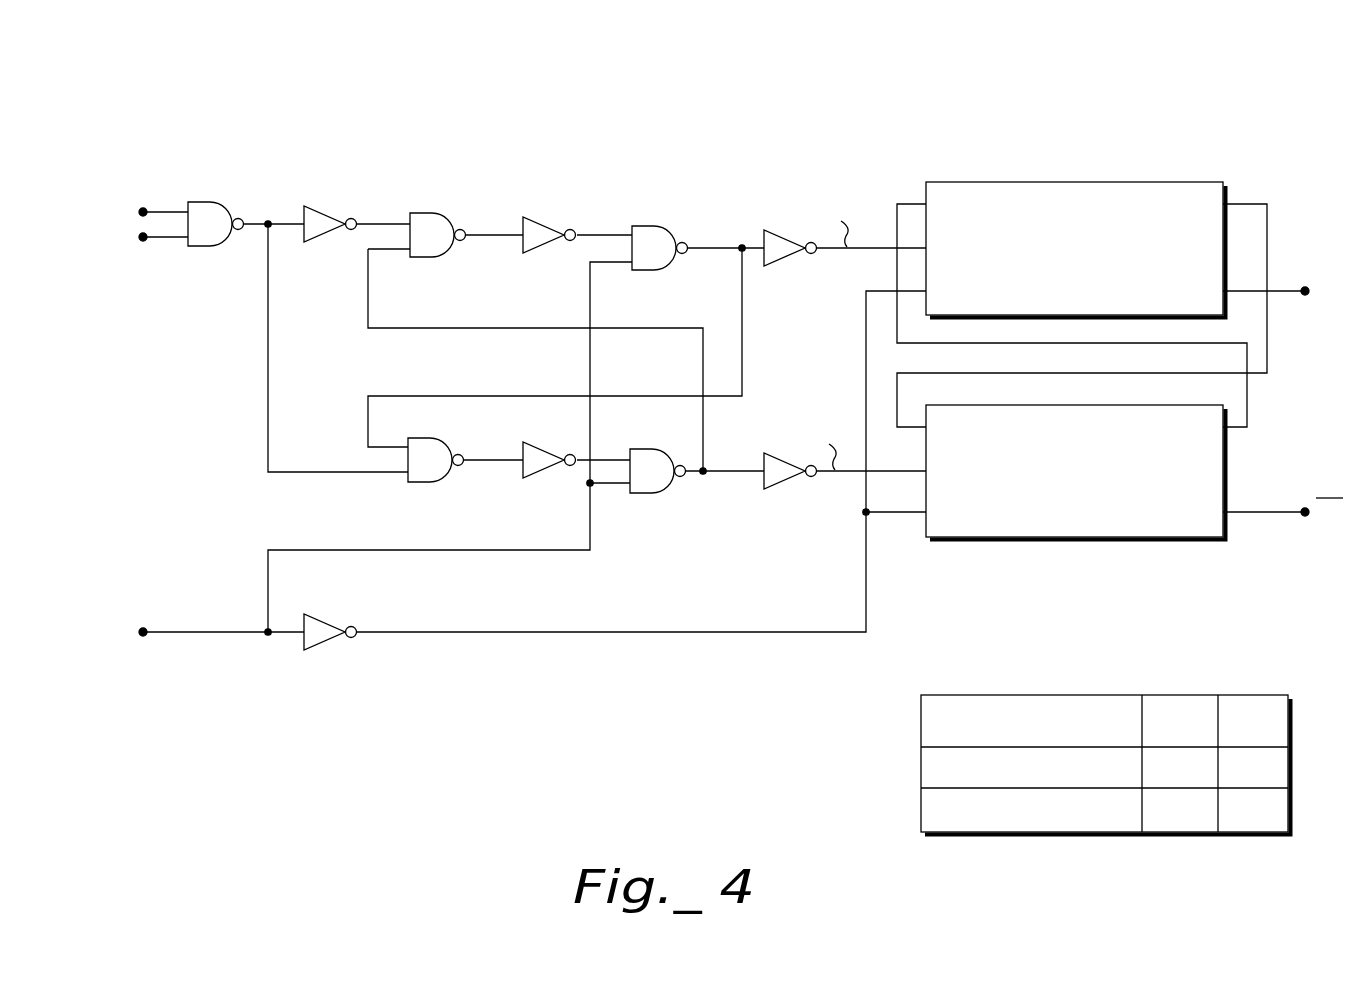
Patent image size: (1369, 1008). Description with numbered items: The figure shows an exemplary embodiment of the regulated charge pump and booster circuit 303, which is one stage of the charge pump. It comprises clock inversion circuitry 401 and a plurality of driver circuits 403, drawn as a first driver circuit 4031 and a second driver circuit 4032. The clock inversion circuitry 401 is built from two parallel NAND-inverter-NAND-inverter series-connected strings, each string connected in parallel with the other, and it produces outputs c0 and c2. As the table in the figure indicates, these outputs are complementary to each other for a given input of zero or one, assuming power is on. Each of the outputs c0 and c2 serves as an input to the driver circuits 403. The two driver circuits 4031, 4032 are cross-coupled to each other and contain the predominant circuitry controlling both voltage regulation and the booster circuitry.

The regulated charge pump and booster circuit 303 is at (886, 58).
The clock inversion circuitry 401 is at (865, 186).
The driver circuits 403 is at (1121, 361).
The driver circuit 4031 is at (1095, 304).
The driver circuit 4032 is at (1095, 526).